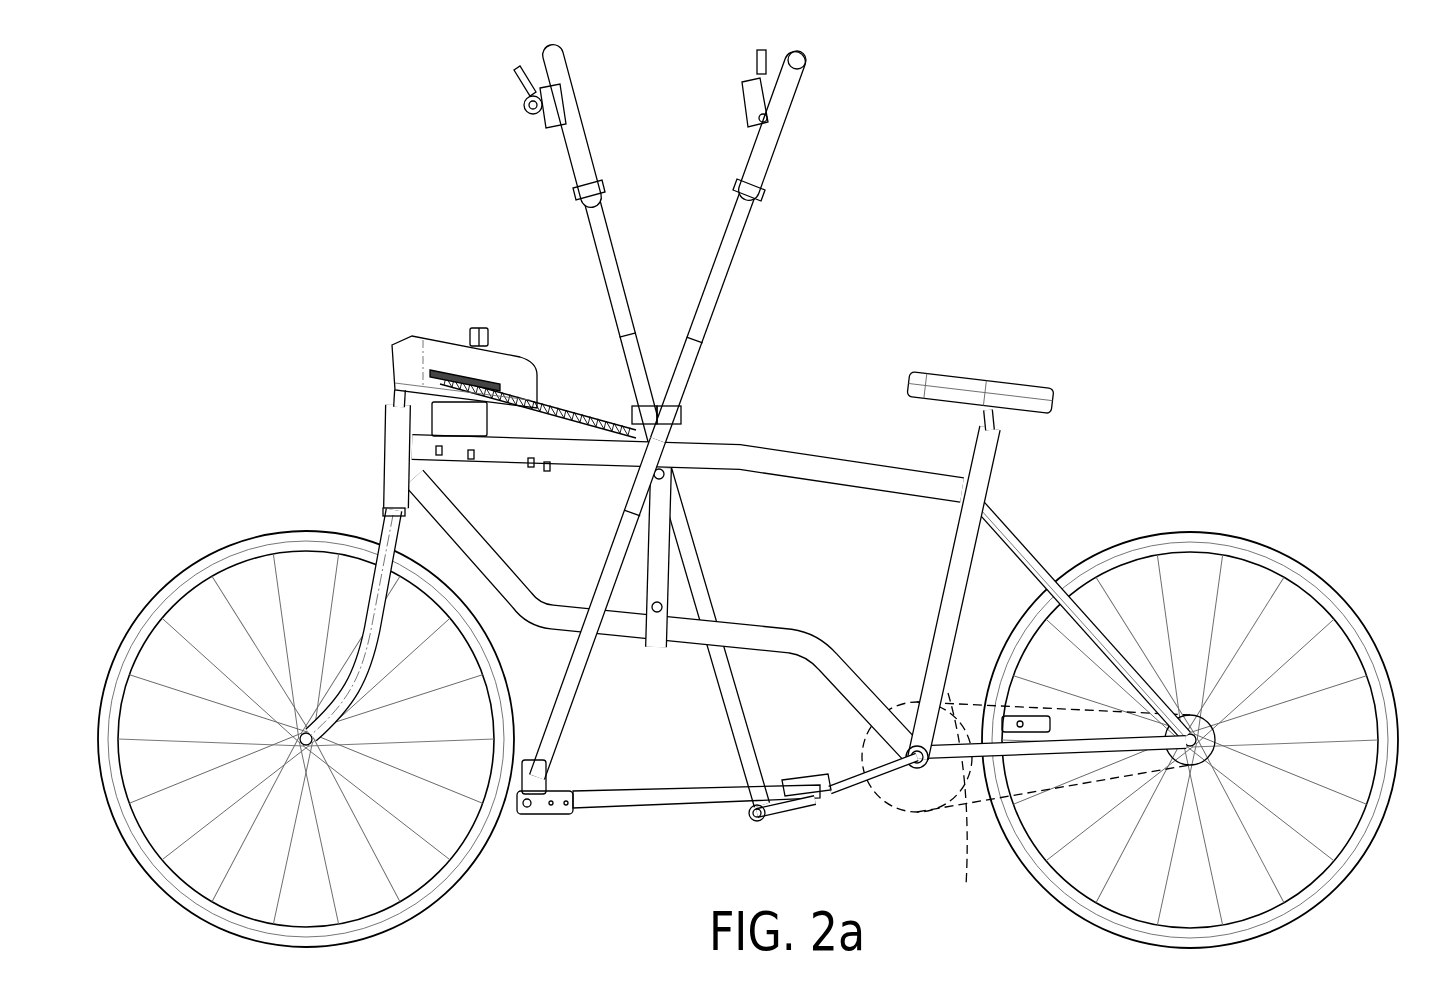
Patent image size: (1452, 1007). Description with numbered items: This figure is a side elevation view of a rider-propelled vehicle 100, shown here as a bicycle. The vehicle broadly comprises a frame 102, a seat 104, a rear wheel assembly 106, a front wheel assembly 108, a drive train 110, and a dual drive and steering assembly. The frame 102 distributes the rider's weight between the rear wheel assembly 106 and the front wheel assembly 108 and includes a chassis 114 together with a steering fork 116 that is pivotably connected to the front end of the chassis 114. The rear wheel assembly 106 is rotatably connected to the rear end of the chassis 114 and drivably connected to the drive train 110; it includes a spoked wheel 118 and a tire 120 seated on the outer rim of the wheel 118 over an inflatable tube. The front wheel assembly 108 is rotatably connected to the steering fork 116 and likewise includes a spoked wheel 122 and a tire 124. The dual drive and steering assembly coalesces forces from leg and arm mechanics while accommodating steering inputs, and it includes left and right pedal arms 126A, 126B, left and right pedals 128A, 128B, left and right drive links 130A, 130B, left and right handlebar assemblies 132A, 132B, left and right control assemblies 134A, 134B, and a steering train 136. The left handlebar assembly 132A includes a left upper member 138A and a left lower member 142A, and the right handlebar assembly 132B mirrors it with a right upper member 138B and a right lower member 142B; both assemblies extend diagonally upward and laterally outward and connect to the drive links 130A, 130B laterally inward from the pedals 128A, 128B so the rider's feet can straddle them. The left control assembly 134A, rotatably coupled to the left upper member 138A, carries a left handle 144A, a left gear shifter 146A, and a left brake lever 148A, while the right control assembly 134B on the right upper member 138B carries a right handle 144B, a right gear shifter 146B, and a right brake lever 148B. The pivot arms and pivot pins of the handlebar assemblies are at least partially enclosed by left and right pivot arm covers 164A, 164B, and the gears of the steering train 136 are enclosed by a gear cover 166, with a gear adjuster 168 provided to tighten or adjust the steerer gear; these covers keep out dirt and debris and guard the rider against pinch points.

The rider-propelled vehicle 100 is at (760, 500).
The frame 102 is at (791, 568).
The seat 104 is at (1013, 370).
The rear wheel assembly 106 is at (1202, 720).
The front wheel assembly 108 is at (317, 720).
The drive train 110 is at (915, 812).
The chassis 114 is at (948, 580).
The steering fork 116 is at (358, 518).
The wheel 118 is at (1323, 900).
The tire 120 is at (1350, 868).
The wheel 122 is at (466, 868).
The tire 124 is at (439, 899).
The left pedal arm 126A is at (842, 775).
The right pedal arm 126B is at (966, 880).
The left pedal 128A is at (815, 805).
The right pedal 128B is at (1020, 714).
The left drive link 130A is at (685, 800).
The right drive link 130B is at (812, 810).
The left handlebar assembly 132A is at (722, 419).
The right handlebar assembly 132B is at (589, 424).
The left control assembly 134A is at (784, 122).
The right control assembly 134B is at (542, 123).
The steering train 136 is at (420, 384).
The left upper member 138A is at (731, 262).
The right upper member 138B is at (592, 243).
The left lower member 142A is at (570, 690).
The right lower member 142B is at (722, 718).
The left handle 144A is at (812, 66).
The right handle 144B is at (566, 52).
The left gear shifter 146A is at (748, 110).
The right gear shifter 146B is at (572, 104).
The left brake lever 148A is at (765, 73).
The right brake lever 148B is at (514, 88).
The left pivot arm cover 164A is at (683, 420).
The right pivot arm cover 164B is at (622, 420).
The gear cover 166 is at (395, 367).
The gear adjuster 168 is at (483, 333).